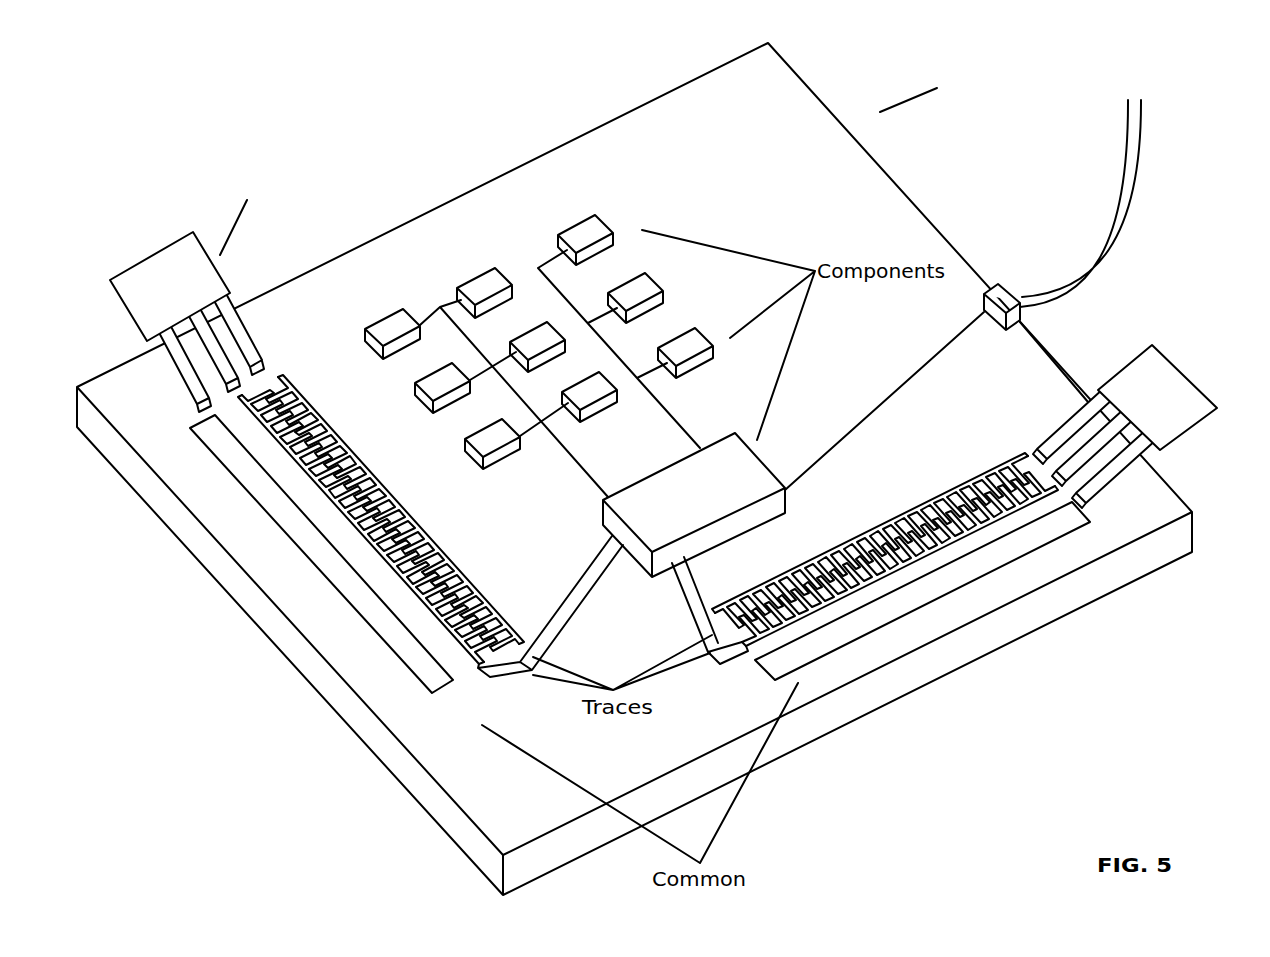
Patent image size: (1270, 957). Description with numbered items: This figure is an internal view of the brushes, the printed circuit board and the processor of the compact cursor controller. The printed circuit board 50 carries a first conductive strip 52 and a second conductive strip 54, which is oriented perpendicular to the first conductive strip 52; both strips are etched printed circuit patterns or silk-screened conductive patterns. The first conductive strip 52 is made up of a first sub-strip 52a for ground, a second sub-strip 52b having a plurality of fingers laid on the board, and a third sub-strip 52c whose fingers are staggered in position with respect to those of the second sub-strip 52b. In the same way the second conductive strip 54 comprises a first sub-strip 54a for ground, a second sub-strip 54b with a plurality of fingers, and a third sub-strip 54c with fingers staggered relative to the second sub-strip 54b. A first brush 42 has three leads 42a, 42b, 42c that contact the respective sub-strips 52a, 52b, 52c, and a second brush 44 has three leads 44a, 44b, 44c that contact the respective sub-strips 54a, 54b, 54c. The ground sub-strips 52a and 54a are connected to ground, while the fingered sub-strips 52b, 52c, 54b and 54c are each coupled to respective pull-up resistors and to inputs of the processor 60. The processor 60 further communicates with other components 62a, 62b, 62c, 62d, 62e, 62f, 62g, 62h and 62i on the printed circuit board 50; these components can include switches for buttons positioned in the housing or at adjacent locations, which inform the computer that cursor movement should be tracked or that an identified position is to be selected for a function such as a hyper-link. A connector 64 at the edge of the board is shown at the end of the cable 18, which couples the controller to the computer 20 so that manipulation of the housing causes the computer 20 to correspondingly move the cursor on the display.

The cable 18 is at (1123, 212).
The computer 20 is at (1178, 89).
The first brush 42 is at (205, 293).
The lead of first brush 42a is at (186, 387).
The lead of first brush 42b is at (240, 322).
The lead of first brush 42c is at (262, 365).
The second brush 44 is at (1120, 425).
The lead of second brush 44a is at (1110, 498).
The lead of second brush 44b is at (1077, 396).
The lead of second brush 44c is at (1050, 436).
The printed circuit board 50 is at (672, 90).
The first conductive strip 52 is at (258, 521).
The first sub-strip 52a is at (437, 697).
The second sub-strip 52b is at (477, 673).
The third sub-strip 52c is at (478, 589).
The second conductive strip 54 is at (888, 636).
The first sub-strip 54a is at (765, 678).
The second sub-strip 54b is at (728, 648).
The third sub-strip 54c is at (737, 597).
The processor 60 is at (763, 462).
The component 62a is at (370, 347).
The component 62b is at (420, 404).
The component 62c is at (470, 464).
The component 62d is at (486, 277).
The component 62e is at (530, 334).
The component 62f is at (580, 392).
The component 62g is at (608, 219).
The component 62h is at (655, 274).
The component 62i is at (700, 329).
The connector 64 is at (988, 282).